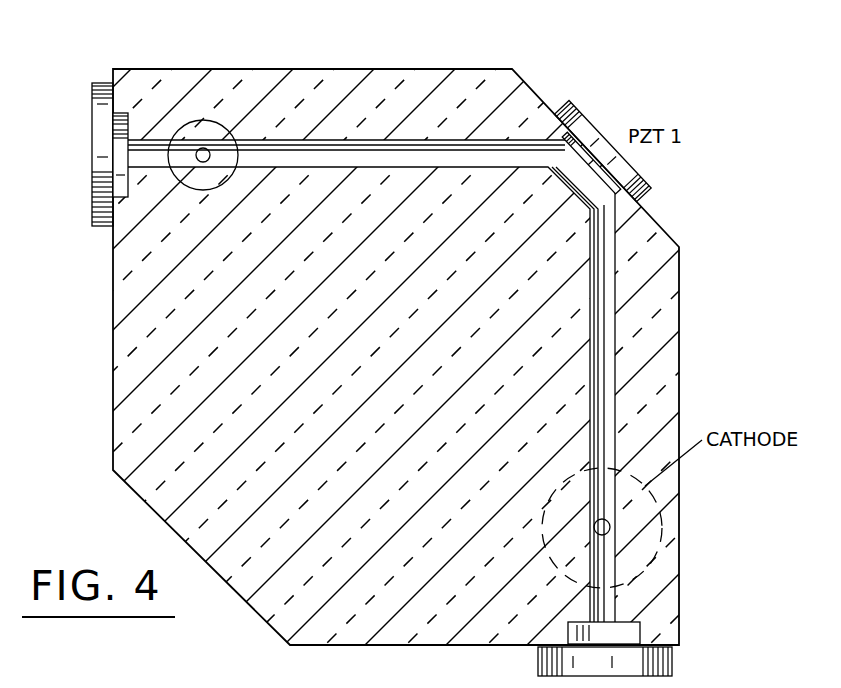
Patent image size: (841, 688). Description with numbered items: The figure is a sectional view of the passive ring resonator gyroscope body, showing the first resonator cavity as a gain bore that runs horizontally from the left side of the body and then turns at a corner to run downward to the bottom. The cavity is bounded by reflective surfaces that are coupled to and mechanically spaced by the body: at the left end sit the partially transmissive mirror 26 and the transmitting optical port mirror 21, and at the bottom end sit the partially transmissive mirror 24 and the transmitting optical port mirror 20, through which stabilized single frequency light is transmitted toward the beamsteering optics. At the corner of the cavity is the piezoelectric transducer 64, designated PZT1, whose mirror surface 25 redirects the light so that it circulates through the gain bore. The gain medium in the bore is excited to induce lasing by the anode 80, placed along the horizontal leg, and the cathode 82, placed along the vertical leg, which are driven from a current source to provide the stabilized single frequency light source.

The partially transmissive mirror 21 is at (100, 160).
The partially transmissive mirror 26 is at (129, 141).
The piezoelectric transducer (PZT1) 64 is at (603, 133).
The mirror surface 25 is at (599, 193).
The anode 80 is at (223, 127).
The cathode 82 is at (640, 539).
The partially transmissive mirror 24 is at (600, 622).
The partially transmissive mirror 20 is at (657, 670).